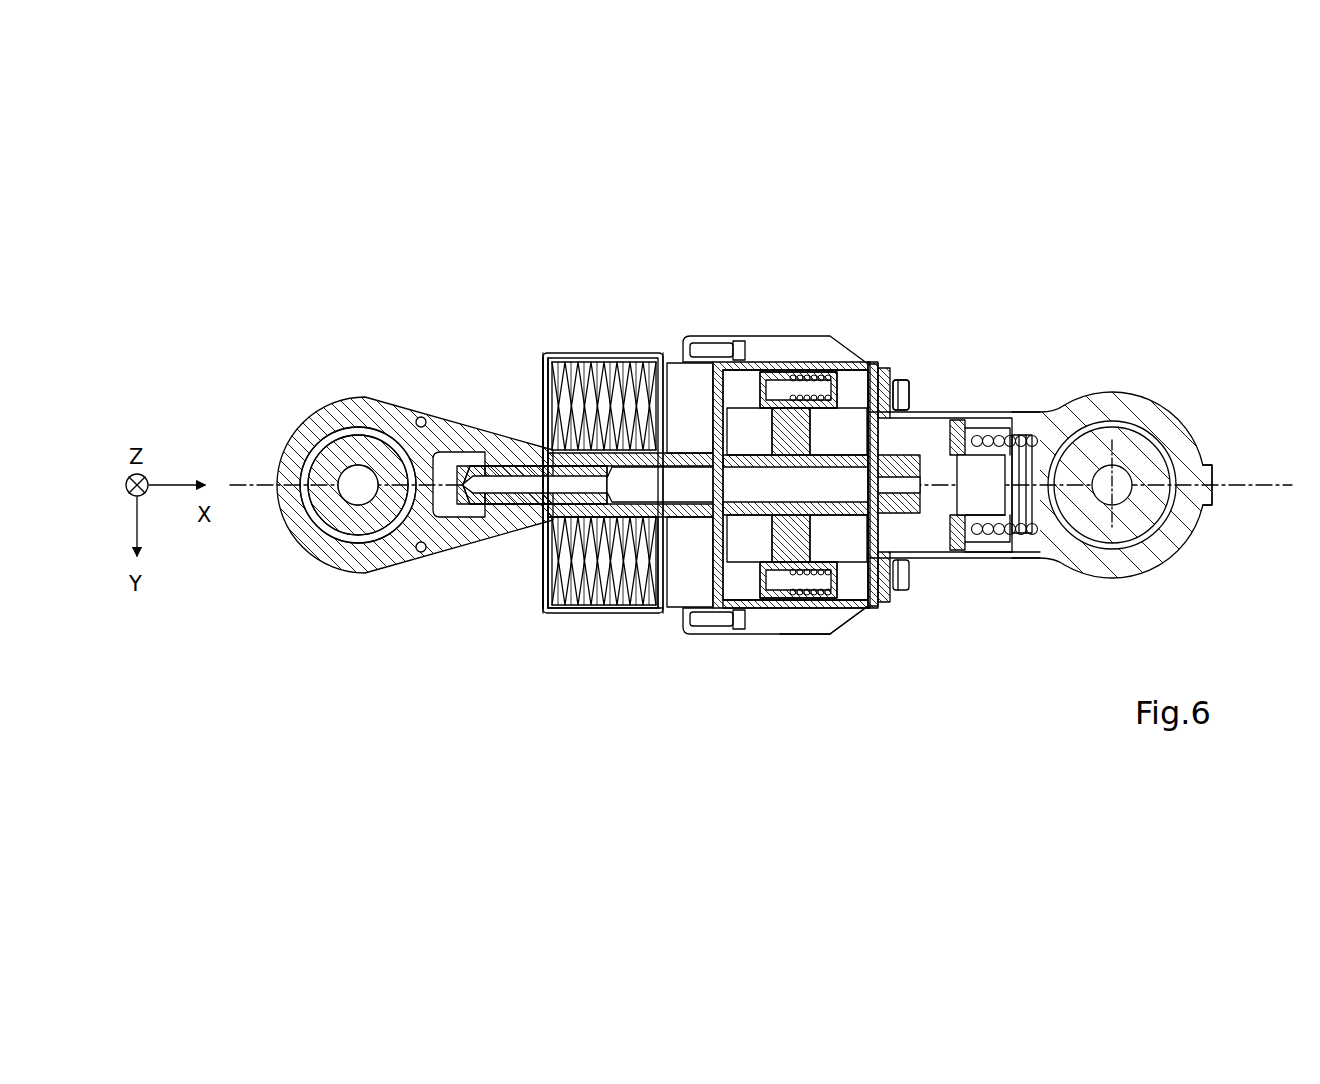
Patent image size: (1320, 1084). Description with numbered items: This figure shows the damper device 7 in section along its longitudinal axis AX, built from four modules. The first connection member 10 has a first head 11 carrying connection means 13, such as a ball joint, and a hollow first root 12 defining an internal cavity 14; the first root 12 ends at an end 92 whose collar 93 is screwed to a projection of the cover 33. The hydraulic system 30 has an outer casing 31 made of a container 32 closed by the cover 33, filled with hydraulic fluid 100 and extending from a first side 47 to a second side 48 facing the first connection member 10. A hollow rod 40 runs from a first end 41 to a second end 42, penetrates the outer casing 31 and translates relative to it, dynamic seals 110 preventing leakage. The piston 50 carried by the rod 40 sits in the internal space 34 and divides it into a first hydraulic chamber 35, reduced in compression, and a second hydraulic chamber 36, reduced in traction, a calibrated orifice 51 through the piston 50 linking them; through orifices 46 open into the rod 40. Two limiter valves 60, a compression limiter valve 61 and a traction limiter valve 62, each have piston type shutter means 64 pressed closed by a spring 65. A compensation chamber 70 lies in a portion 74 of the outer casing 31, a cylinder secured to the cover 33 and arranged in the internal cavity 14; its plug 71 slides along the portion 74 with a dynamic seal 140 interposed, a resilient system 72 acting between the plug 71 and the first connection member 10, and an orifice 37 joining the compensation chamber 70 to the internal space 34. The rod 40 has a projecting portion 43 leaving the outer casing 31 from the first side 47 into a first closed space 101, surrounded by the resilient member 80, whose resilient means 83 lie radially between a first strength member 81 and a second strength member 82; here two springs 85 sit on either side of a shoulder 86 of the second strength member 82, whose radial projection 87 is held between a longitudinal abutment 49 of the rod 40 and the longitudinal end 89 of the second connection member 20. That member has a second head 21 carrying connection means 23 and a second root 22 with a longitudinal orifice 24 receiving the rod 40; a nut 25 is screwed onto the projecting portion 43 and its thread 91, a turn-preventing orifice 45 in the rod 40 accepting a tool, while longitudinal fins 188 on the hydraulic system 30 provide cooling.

The damper device 7 is at (265, 600).
The first connection member 10 is at (1180, 416).
The first head 11 is at (1213, 472).
The first root 12 is at (1000, 413).
The connection means 13 is at (1175, 548).
The internal cavity 14 is at (995, 552).
The second connection member 20 is at (315, 575).
The second head 21 is at (340, 398).
The second root 22 is at (527, 505).
The connection means 23 is at (380, 432).
The longitudinal orifice 24 is at (495, 508).
The nut 25 is at (438, 412).
The hydraulic system 30 is at (868, 620).
The outer casing 31 is at (788, 620).
The container 32 is at (768, 616).
The cover 33 is at (872, 395).
The internal space 34 is at (893, 408).
The first hydraulic chamber 35 is at (845, 545).
The second hydraulic chamber 36 is at (759, 545).
The orifice 37 is at (872, 440).
The rod 40 is at (673, 468).
The first end 41 is at (455, 512).
The second end 42 is at (892, 505).
The projecting portion 43 is at (630, 608).
The turn-preventing orifice 45 is at (878, 614).
The through orifices 46 is at (768, 468).
The first side 47 is at (687, 345).
The second side 48 is at (1010, 425).
The longitudinal abutment 49 is at (562, 610).
The piston 50 is at (848, 412).
The calibrated orifice 51 is at (748, 360).
The limiter valve 60 is at (760, 600).
The compression limiter valve 61 is at (798, 580).
The traction limiter valve 62 is at (790, 340).
The shutter means 64 is at (830, 392).
The spring 65 is at (735, 618).
The compensation chamber 70 is at (991, 507).
The plug 71 is at (985, 428).
The resilient system 72 is at (1027, 540).
The portion 74 is at (975, 548).
The resilient member 80 is at (528, 650).
The first strength member 81 is at (597, 357).
The second strength member 82 is at (595, 607).
The resilient means 83 is at (545, 365).
The spring 85 is at (545, 483).
The shoulder 86 is at (612, 392).
The radial projection 87 is at (543, 600).
The longitudinal end 89 is at (545, 385).
The thread 91 is at (478, 512).
The end 92 is at (903, 385).
The collar 93 is at (901, 395).
The hydraulic fluid 100 is at (866, 428).
The first closed space 101 is at (703, 414).
The dynamic seals 110 is at (675, 548).
The dynamic seal 140 is at (962, 552).
The longitudinal fins 188 is at (812, 622).
The longitudinal axis AX is at (1253, 487).